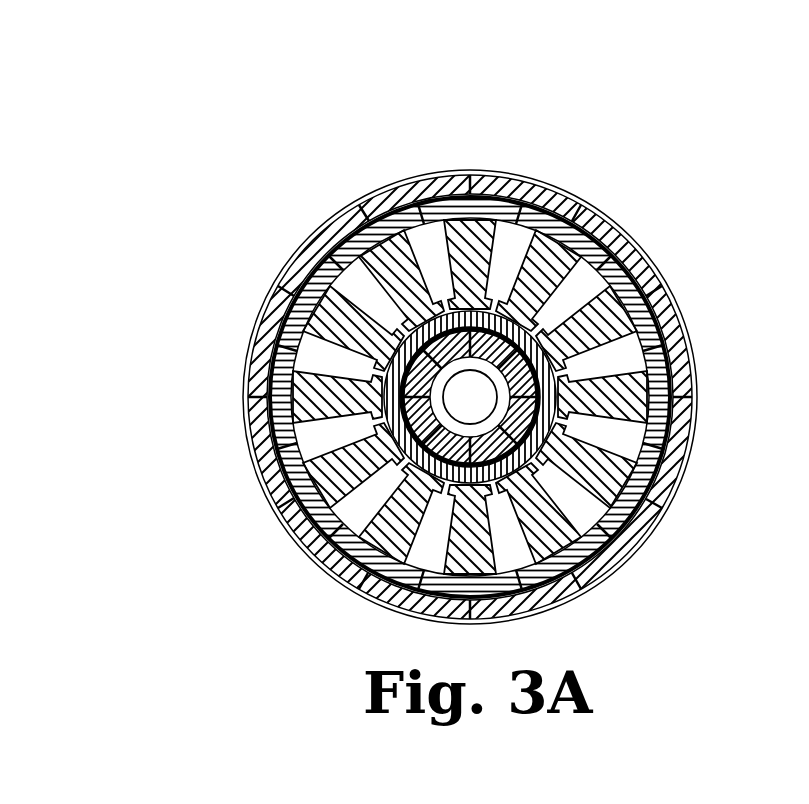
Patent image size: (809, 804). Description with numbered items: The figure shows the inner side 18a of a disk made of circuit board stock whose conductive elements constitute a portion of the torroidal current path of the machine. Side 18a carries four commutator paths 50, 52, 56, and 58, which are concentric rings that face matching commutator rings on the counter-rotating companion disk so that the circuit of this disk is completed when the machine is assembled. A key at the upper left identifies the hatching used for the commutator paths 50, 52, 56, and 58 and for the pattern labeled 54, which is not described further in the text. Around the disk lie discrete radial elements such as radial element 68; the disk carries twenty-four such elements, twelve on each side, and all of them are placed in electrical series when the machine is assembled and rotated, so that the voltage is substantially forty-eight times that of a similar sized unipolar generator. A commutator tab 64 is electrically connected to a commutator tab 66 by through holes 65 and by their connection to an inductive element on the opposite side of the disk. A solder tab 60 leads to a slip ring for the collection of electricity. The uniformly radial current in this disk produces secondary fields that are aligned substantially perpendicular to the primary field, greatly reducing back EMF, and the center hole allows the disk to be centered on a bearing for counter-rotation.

The side of disk 18a is at (391, 344).
The commutator path 50 is at (309, 250).
The commutator path 52 is at (431, 280).
The stator teeth (diagonal hatch material) 54 is at (423, 348).
The commutator path 56 is at (375, 381).
The commutator path 58 is at (391, 341).
The solder tab 60 is at (550, 396).
The commutator tab 64 is at (590, 205).
The through holes 65 is at (470, 333).
The commutator tab 66 is at (523, 188).
The radial element 68 is at (603, 313).